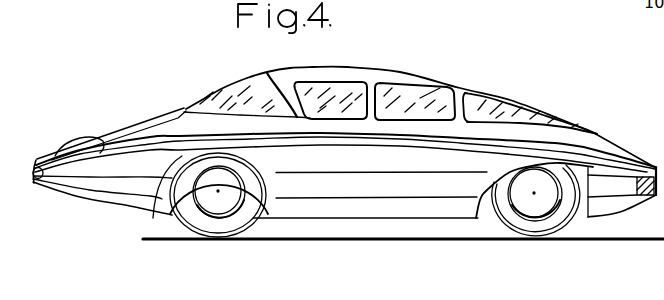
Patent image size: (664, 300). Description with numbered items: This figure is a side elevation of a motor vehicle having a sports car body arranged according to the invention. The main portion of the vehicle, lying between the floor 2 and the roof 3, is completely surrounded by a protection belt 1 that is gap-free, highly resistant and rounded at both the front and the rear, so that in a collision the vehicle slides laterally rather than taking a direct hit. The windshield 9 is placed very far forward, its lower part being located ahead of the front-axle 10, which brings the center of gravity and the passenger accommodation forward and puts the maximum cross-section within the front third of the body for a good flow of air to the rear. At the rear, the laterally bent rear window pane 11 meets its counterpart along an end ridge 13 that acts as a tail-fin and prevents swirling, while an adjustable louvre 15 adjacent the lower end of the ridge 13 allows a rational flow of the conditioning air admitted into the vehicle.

The belt 1 is at (407, 143).
The floor 2 is at (366, 218).
The roof 3 is at (280, 80).
The windshield 9 is at (230, 97).
The front-axle 10 is at (203, 188).
The rear window pane 11 is at (513, 110).
The end ridge 13 is at (552, 113).
The adjustable louvre 15 is at (588, 130).